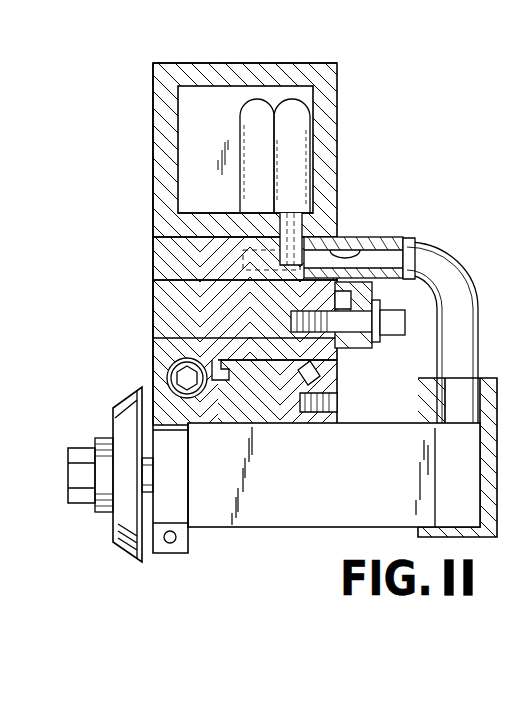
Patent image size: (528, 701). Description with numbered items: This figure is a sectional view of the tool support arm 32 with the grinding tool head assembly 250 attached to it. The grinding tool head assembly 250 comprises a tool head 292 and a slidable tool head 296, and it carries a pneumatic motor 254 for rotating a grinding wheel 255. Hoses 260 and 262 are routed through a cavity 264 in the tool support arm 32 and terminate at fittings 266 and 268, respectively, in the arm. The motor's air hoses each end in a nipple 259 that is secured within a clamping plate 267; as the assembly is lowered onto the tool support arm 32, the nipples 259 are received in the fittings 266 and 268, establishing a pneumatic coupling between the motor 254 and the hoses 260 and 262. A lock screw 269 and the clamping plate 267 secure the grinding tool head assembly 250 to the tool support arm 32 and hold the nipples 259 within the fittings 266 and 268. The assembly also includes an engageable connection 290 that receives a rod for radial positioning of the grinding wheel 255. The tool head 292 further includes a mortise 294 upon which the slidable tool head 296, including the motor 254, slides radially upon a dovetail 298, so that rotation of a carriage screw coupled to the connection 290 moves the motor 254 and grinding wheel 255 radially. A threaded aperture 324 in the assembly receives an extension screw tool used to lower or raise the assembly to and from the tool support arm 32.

The tool support arm 32 is at (232, 63).
The grinding tool head assembly 250 is at (145, 230).
The pneumatic motor 254 is at (392, 490).
The grinding wheel 255 is at (113, 527).
The nipple 259 is at (407, 258).
The hose 260 is at (318, 168).
The hose 262 is at (240, 130).
The cavity 264 is at (178, 172).
The fitting 266 is at (378, 237).
The clamping plate 267 is at (438, 302).
The fitting 268 is at (208, 213).
The lock screw 269 is at (340, 347).
The engageable connection 290 is at (180, 376).
The tool head 292 is at (153, 340).
The mortise 294 is at (216, 368).
The slidable tool head 296 is at (153, 386).
The dovetail 298 is at (280, 365).
The aperture 324 is at (332, 404).